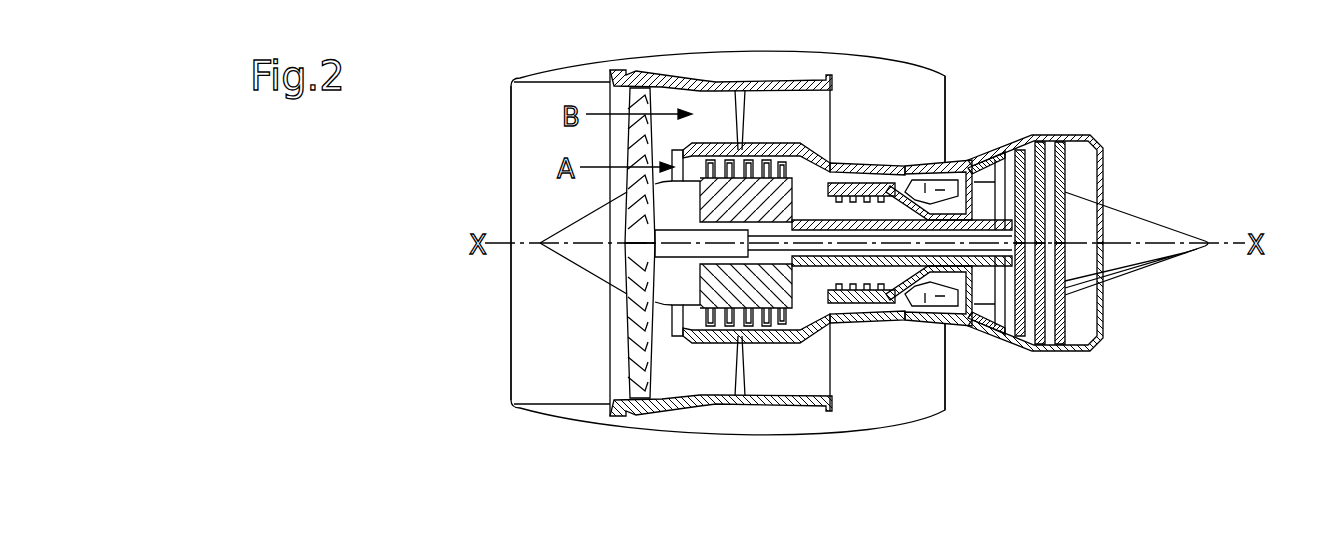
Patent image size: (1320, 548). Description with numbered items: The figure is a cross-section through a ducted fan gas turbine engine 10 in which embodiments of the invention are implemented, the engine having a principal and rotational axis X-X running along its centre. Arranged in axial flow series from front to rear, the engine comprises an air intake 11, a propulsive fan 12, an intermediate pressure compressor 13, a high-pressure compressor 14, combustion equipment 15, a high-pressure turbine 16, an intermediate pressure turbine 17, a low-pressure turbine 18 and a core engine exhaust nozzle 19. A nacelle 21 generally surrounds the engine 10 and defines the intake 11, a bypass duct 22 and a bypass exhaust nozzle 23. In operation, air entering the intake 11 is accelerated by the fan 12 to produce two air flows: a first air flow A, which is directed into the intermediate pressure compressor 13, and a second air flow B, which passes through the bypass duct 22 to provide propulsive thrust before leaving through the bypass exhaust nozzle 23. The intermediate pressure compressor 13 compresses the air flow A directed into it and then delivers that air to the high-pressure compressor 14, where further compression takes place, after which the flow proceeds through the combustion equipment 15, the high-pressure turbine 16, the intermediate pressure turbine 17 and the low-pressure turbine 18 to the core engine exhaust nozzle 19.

The ducted fan gas turbine engine 10 is at (502, 44).
The air intake 11 is at (562, 84).
The propulsive fan 12 is at (628, 355).
The intermediate pressure compressor 13 is at (758, 326).
The high-pressure compressor 14 is at (862, 176).
The combustion equipment 15 is at (884, 322).
The high-pressure turbine 16 is at (960, 320).
The intermediate pressure turbine 17 is at (995, 167).
The low-pressure turbine 18 is at (1013, 349).
The core engine exhaust nozzle 19 is at (1098, 137).
The nacelle 21 is at (732, 53).
The bypass duct 22 is at (922, 122).
The bypass exhaust nozzle 23 is at (946, 78).